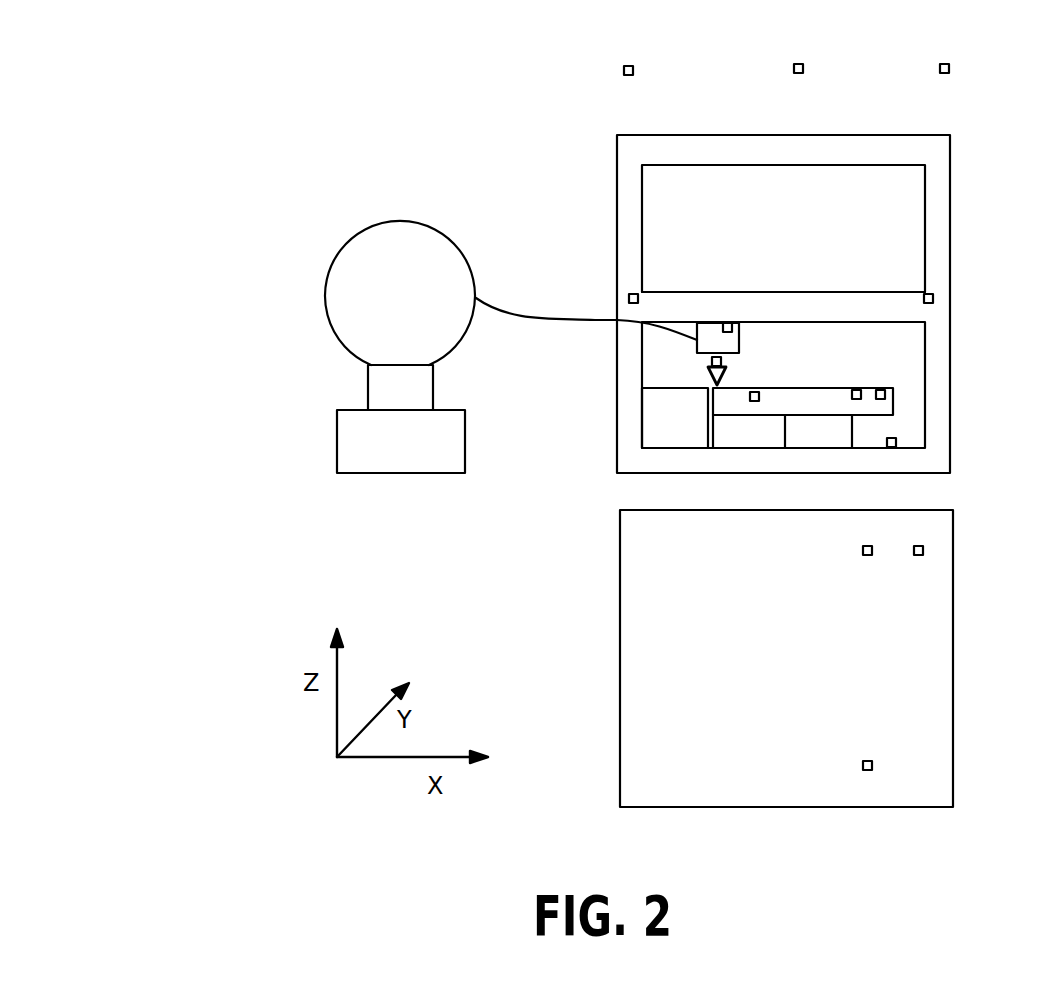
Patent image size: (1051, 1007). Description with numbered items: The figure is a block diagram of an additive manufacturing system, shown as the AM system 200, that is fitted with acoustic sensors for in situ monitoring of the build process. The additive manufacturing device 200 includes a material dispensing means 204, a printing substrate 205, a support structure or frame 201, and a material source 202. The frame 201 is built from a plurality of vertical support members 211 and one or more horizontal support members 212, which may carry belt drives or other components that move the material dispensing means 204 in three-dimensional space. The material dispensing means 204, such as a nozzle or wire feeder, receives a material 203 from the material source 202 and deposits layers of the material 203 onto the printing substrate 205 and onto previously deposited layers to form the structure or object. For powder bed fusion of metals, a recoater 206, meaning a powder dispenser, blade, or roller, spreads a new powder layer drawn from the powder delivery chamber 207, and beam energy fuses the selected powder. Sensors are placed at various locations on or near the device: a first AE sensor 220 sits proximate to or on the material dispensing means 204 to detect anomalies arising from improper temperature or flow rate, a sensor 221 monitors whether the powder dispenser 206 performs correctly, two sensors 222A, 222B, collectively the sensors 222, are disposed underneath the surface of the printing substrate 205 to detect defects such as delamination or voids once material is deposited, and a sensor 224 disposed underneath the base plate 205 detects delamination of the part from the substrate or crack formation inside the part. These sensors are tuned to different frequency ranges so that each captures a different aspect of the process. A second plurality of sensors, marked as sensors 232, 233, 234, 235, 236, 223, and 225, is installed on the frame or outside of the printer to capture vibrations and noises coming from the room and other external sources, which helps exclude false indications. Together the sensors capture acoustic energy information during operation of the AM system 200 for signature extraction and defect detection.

The AM system 200 is at (138, 73).
The support structure or frame 201 is at (782, 135).
The material source 202 is at (400, 222).
The material 203 is at (490, 305).
The material dispensing means 204 is at (739, 340).
The printing substrate 205 is at (768, 420).
The recoater 206 is at (708, 371).
The powder delivery chamber 207 is at (653, 422).
The vertical support members 211 is at (617, 285).
The horizontal support members 212 is at (845, 292).
The first AE sensor 220 is at (732, 324).
The sensor 221 is at (722, 361).
The sensors 222 is at (861, 391).
The sensor 222A is at (864, 549).
The sensor 222B is at (864, 764).
The sensor 223 is at (760, 396).
The sensor 224 is at (885, 396).
The sensor 225 is at (897, 440).
The sensor 232 is at (633, 66).
The sensor 233 is at (803, 64).
The sensor 234 is at (949, 64).
The sensor 235 is at (638, 294).
The sensor 236 is at (933, 297).